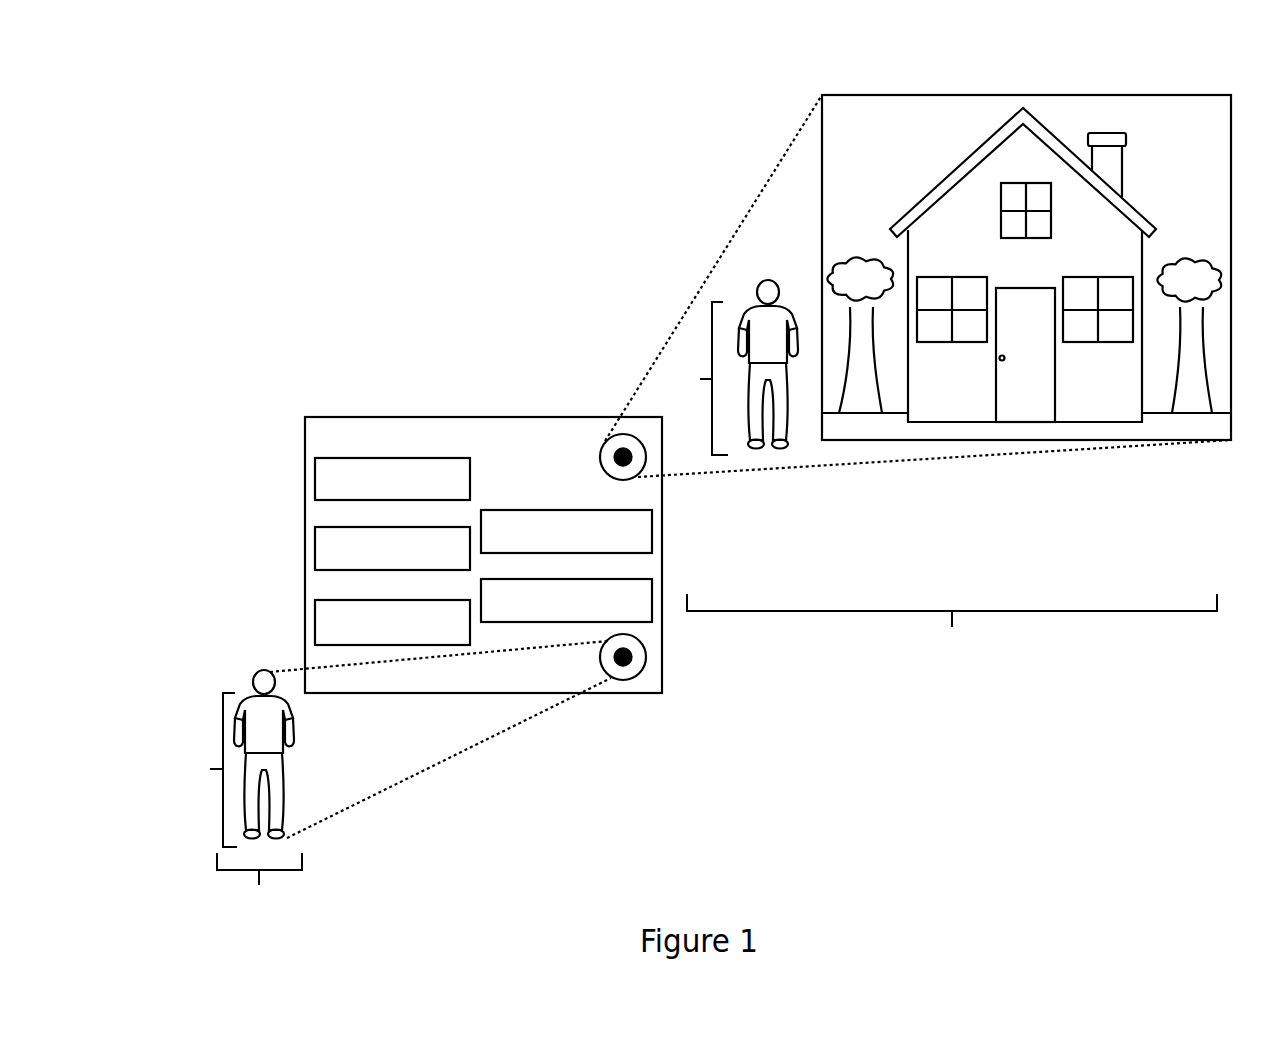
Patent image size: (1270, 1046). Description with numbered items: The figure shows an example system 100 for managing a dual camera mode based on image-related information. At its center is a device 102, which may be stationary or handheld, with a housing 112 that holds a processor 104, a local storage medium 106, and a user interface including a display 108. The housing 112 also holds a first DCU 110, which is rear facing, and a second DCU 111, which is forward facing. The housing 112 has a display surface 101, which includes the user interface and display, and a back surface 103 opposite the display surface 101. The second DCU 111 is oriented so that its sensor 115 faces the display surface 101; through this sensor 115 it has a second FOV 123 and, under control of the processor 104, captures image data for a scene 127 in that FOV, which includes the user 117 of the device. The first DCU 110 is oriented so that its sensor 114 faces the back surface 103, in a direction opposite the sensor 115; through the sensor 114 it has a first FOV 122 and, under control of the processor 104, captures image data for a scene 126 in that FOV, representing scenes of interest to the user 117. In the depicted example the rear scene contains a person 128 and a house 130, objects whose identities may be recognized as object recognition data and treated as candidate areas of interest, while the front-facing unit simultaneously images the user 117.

The system 100 is at (326, 114).
The display surface 101 is at (382, 678).
The device 102 is at (678, 550).
The back surface 103 is at (481, 706).
The processor 104 is at (418, 458).
The local storage medium 106 is at (418, 527).
The user interface 108 is at (418, 600).
The first DCU 110 is at (600, 510).
The second DCU 111 is at (600, 579).
The housing 112 is at (305, 433).
The sensor 114 is at (601, 459).
The sensor 115 is at (647, 658).
The user 117 is at (266, 659).
The first FOV 122 is at (693, 378).
The second FOV 123 is at (203, 770).
The scene 126 is at (952, 625).
The scene 127 is at (259, 883).
The person 128 is at (774, 263).
The house 130 is at (1151, 75).